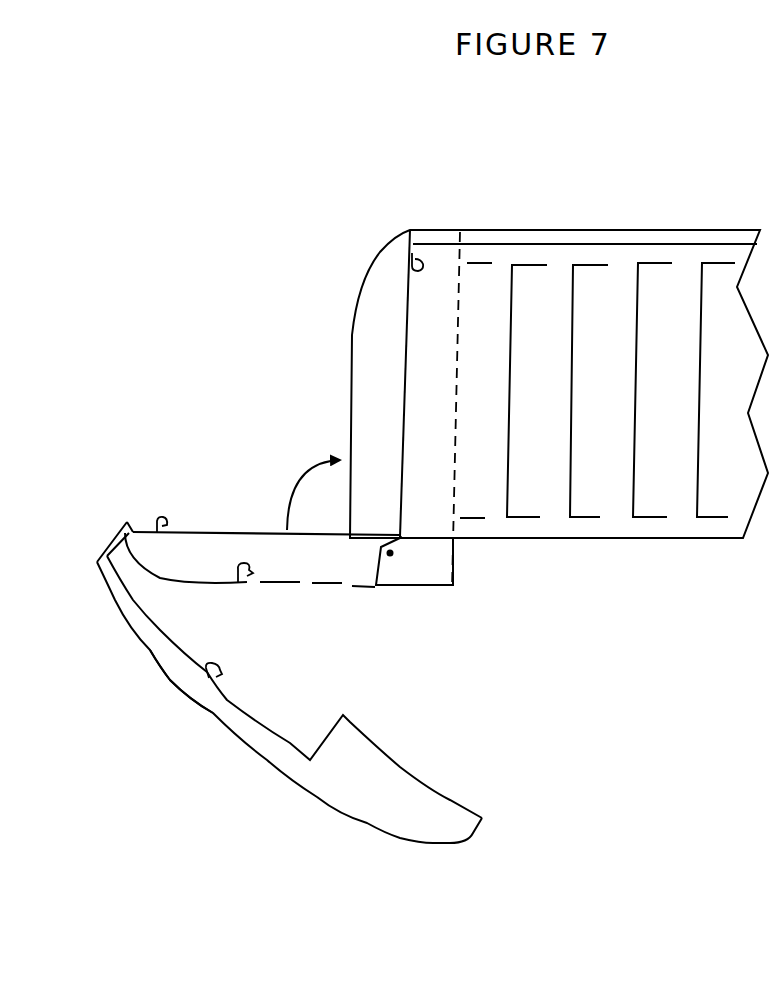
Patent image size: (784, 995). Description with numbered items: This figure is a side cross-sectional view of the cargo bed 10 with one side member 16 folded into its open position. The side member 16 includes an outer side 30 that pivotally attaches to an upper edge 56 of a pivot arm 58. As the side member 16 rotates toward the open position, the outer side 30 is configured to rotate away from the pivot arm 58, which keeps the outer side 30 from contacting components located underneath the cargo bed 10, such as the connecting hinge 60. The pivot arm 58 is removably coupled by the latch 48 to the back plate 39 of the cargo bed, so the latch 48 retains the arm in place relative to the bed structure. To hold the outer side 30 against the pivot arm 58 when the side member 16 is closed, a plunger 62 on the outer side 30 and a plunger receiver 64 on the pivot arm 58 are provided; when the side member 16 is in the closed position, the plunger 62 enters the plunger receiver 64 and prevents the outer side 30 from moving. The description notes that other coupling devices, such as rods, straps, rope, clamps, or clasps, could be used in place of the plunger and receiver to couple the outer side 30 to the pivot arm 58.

The cargo bed 10 is at (280, 240).
The side member 16 is at (258, 772).
The outer side 30 is at (183, 672).
The back member 39 is at (553, 282).
The latch 48 is at (160, 524).
The upper edge 56 is at (134, 530).
The pivot arm 58 is at (235, 552).
The connecting hinge 60 is at (415, 562).
The plunger 62 is at (222, 672).
The plunger receiver 64 is at (252, 572).